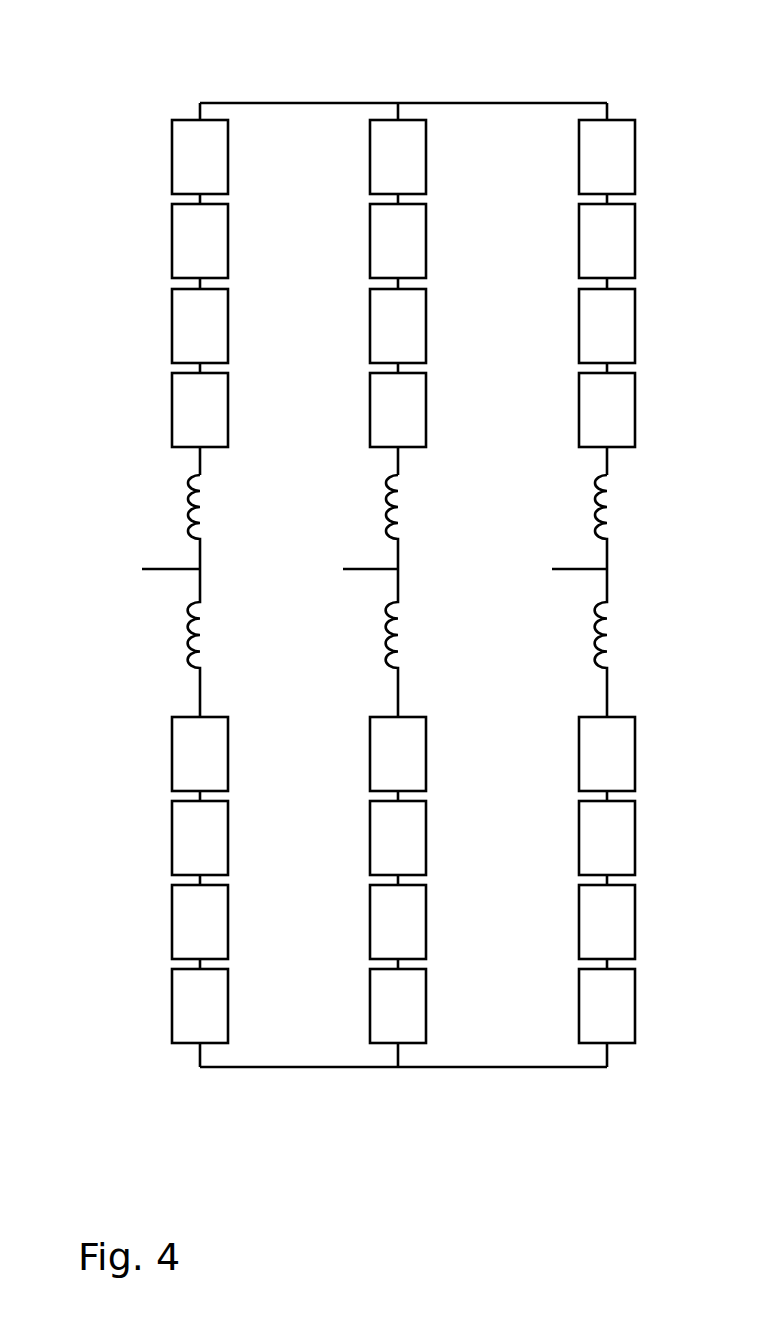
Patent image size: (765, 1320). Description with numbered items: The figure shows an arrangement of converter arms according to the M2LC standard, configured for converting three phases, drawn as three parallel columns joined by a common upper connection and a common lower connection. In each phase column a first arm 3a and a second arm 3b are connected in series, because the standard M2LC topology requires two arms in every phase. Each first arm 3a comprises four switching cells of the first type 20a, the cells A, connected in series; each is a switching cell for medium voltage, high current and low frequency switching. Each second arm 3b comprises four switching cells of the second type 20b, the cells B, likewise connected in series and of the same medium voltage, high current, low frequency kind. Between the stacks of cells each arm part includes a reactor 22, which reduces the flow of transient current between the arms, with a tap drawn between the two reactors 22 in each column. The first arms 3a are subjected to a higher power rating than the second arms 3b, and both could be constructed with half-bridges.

The first arm 3a is at (201, 1094).
The second arm 3b is at (201, 84).
The switching cell of the first type 20a is at (186, 779).
The switching cell of the second type 20b is at (186, 184).
The reactor 22 is at (186, 512).